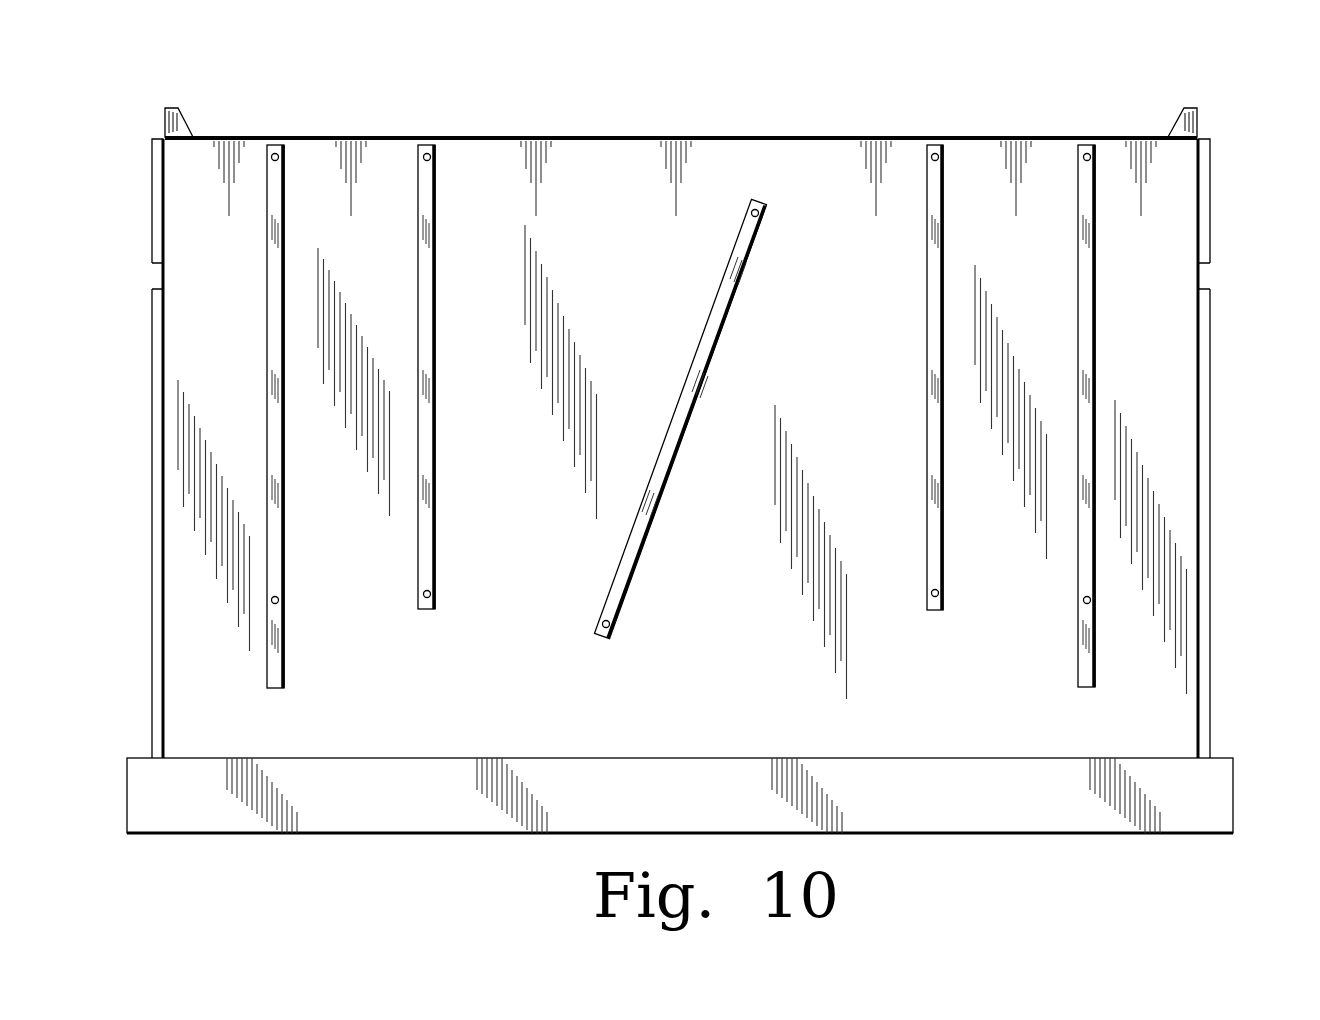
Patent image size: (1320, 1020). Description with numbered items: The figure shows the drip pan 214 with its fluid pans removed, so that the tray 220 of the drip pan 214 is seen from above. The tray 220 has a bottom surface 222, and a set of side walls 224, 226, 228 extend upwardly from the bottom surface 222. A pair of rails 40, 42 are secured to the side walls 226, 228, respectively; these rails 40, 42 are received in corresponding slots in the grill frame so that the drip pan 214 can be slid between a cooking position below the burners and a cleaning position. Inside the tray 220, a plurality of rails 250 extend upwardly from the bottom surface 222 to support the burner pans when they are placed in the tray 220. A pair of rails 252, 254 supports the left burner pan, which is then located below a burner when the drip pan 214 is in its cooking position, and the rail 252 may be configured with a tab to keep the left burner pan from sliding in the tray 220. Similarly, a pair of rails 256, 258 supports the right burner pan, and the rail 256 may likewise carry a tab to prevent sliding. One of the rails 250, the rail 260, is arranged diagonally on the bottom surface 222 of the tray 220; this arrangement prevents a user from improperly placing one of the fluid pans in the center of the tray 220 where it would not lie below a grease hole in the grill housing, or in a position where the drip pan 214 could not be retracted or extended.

The drip pan 214 is at (1252, 130).
The tray 220 is at (452, 137).
The bottom surface 222 is at (725, 145).
The side wall 224 is at (725, 757).
The side wall 226 is at (163, 658).
The side wall 228 is at (1198, 733).
The rail 40 is at (167, 448).
The rail 42 is at (1191, 448).
The rails 250 is at (600, 642).
The rail 252 is at (284, 512).
The rail 254 is at (435, 537).
The rail 256 is at (933, 550).
The rail 258 is at (1095, 343).
The rail 260 is at (717, 325).